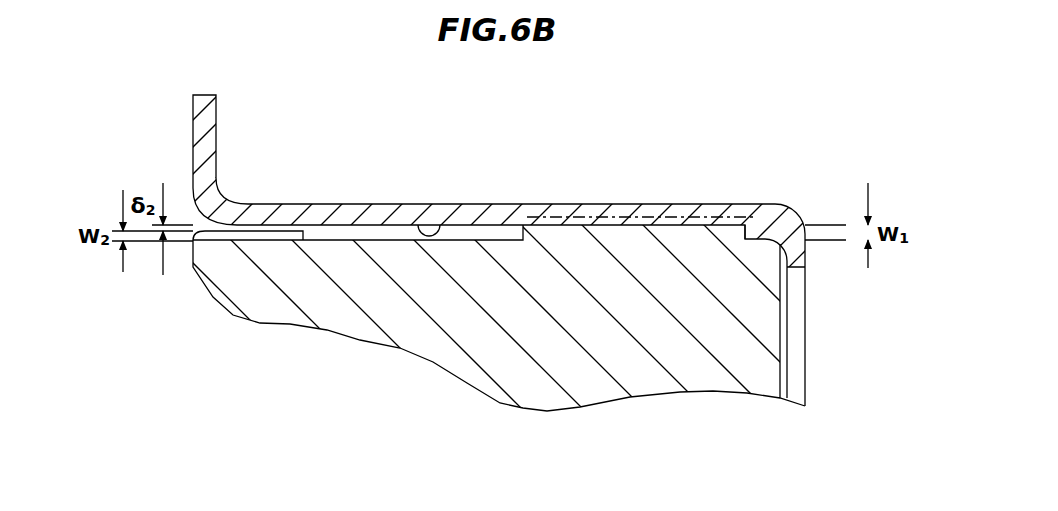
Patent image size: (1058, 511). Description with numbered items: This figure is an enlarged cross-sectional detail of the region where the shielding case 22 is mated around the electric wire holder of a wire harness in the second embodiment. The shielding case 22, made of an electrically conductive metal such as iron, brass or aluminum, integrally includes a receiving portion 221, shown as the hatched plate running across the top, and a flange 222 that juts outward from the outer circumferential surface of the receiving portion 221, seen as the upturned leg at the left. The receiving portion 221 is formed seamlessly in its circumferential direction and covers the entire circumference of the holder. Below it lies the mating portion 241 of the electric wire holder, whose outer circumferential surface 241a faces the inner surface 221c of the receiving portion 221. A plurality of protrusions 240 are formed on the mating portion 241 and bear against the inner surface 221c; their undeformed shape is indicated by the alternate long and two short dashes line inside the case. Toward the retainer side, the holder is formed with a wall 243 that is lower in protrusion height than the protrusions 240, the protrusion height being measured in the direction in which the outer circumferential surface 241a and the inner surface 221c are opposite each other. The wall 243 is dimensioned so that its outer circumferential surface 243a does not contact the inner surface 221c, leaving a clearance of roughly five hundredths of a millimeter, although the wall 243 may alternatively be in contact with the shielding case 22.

The shielding case 22 is at (572, 277).
The receiving portion 221 is at (706, 212).
The inner surface 221c is at (440, 227).
The flange 222 is at (207, 119).
The protrusions 240 is at (572, 232).
The mating portion 241 is at (552, 396).
The outer circumferential surface 241a is at (340, 240).
The wall 243 is at (229, 240).
The outer circumferential surface 243a is at (195, 243).